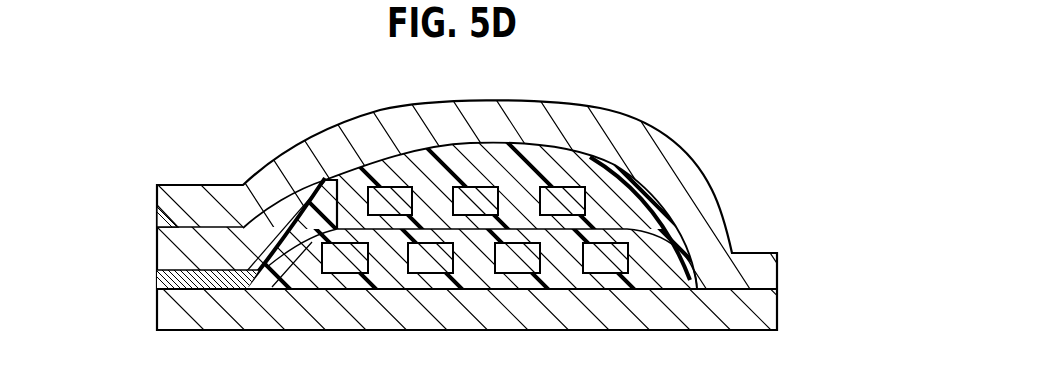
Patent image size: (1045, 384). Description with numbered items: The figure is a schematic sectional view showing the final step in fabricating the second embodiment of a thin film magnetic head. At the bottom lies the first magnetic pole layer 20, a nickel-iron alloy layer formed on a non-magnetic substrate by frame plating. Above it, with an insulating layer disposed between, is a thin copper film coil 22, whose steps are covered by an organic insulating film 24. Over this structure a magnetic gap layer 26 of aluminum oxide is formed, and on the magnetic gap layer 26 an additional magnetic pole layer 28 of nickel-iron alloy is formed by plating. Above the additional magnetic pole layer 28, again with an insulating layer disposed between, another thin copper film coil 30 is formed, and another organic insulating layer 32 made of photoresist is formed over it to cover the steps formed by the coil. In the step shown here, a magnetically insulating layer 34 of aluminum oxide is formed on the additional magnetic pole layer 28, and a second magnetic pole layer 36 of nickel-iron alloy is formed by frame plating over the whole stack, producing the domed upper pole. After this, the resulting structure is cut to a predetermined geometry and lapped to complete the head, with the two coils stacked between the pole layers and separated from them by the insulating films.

The first magnetic pole layer 20 is at (159, 310).
The thin copper film coil 22 is at (612, 280).
The organic insulating film 24 is at (653, 277).
The magnetic gap layer 26 is at (157, 278).
The additional magnetic pole layer 28 is at (158, 250).
The thin copper film coil 30 is at (470, 188).
The organic insulating layer 32 is at (615, 183).
The magnetically insulating layer 34 is at (157, 210).
The second magnetic pole layer 36 is at (355, 128).